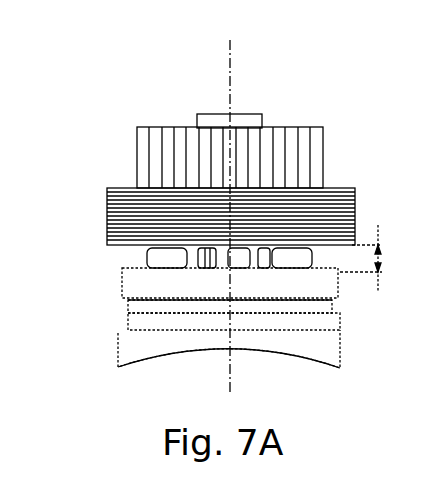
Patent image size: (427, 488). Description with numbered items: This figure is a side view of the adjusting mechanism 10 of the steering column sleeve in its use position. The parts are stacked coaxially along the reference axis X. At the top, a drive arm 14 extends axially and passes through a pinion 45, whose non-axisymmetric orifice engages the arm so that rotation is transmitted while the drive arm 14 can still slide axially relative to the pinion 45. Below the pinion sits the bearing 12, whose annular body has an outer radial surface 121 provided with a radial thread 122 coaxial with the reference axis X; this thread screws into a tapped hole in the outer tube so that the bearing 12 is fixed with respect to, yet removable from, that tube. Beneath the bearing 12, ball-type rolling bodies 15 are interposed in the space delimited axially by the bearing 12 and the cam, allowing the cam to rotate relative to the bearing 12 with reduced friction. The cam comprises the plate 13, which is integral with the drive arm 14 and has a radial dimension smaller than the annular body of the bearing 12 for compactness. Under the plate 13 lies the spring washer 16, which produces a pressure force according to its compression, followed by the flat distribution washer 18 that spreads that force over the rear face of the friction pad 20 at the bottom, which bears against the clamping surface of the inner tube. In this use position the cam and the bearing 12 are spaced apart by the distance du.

The adjusting mechanism 10 is at (97, 126).
The reference axis X is at (232, 62).
The drive arm 14 is at (248, 114).
The pinion 45 is at (312, 147).
The bearing 12 is at (217, 218).
The outer radial surface 121 is at (109, 216).
The radial thread 122 is at (111, 226).
The rolling bodies 15 is at (150, 258).
The plate 13 is at (333, 280).
The spring washer 16 is at (135, 308).
The flat distribution washer 18 is at (135, 322).
The friction pad 20 is at (129, 350).
The distance du is at (378, 258).